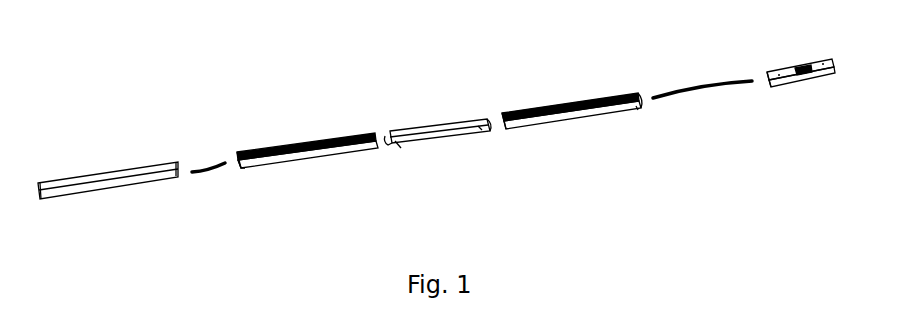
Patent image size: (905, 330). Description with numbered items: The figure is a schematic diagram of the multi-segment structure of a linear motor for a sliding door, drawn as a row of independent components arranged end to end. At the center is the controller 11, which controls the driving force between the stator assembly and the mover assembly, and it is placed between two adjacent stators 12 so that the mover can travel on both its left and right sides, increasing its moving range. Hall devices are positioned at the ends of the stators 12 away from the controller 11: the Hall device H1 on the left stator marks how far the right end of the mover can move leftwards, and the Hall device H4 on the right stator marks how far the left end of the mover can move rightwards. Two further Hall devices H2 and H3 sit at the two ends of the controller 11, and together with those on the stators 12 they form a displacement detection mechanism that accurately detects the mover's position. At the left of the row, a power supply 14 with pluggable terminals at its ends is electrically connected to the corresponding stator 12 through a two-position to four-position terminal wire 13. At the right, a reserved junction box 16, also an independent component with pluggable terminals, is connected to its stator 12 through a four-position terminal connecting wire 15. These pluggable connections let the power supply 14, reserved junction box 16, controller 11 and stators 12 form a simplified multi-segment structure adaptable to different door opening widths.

The controller 11 is at (433, 130).
The stator 12 is at (284, 152).
The two-position to four-position terminal wire 13 is at (207, 176).
The power supply 14 is at (106, 178).
The four-position terminal connecting wire 15 is at (693, 89).
The reserved junction box 16 is at (786, 70).
The Hall device H1 is at (245, 168).
The Hall device H2 is at (401, 148).
The Hall device H3 is at (482, 130).
The Hall device H4 is at (638, 110).